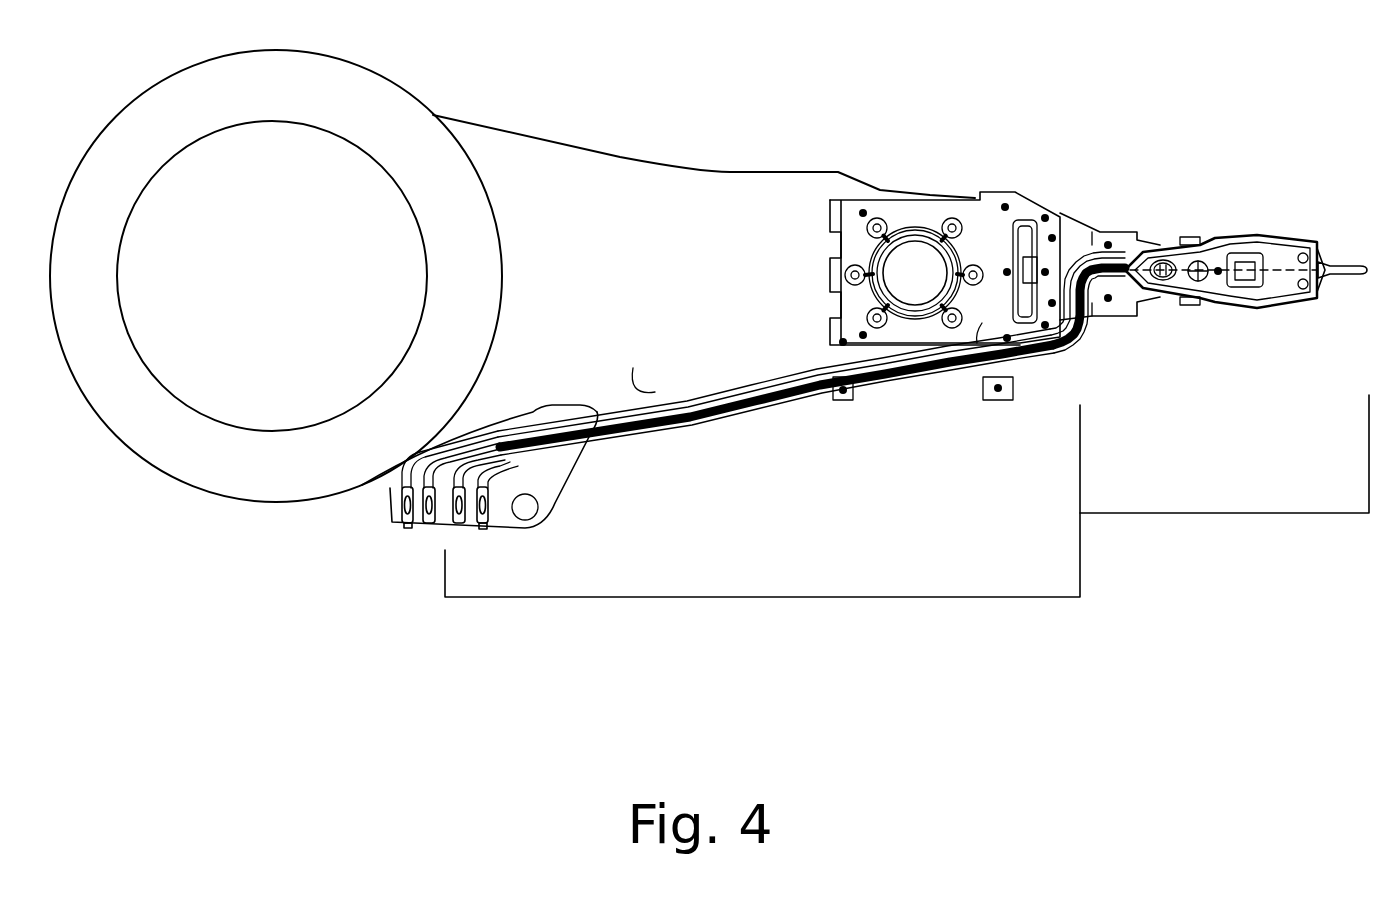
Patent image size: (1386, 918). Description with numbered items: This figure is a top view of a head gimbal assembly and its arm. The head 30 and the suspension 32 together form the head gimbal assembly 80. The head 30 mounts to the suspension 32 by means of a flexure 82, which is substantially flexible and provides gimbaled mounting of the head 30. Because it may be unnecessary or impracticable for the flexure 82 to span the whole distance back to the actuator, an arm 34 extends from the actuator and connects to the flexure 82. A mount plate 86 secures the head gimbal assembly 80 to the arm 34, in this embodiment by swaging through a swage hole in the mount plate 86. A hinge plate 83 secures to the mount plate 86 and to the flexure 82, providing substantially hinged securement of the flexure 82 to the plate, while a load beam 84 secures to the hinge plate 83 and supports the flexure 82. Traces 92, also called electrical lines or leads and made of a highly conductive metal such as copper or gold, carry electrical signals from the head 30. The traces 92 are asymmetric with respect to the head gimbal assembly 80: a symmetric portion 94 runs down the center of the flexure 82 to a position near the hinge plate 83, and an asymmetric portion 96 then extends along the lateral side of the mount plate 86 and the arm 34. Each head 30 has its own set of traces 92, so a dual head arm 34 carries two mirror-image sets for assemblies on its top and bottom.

The head 30 is at (1298, 302).
The suspension 32 is at (986, 498).
The arm 34 is at (683, 409).
The head gimbal assembly 80 is at (1169, 622).
The flexure 82 is at (1168, 295).
The hinge plate 83 is at (945, 380).
The load beam 84 is at (1077, 228).
The mount plate 86 is at (838, 200).
The traces 92 is at (1093, 337).
The symmetric portion 94 is at (1211, 513).
The asymmetric portion 96 is at (748, 597).